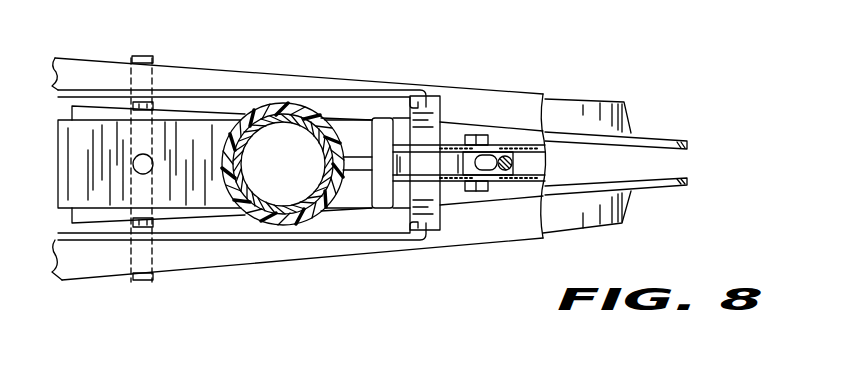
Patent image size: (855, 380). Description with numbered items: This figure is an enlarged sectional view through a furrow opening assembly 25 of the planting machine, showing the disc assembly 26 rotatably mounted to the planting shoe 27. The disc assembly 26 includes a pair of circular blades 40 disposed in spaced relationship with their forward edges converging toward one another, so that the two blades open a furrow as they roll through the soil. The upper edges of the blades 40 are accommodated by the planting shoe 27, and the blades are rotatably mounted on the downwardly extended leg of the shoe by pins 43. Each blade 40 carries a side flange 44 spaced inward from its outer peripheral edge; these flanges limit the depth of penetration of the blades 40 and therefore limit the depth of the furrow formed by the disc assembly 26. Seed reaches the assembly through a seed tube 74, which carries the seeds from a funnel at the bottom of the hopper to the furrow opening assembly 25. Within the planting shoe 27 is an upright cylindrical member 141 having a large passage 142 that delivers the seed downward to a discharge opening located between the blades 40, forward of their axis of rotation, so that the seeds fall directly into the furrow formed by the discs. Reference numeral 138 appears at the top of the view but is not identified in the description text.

The furrow opening assembly 25 is at (333, 67).
The disc assembly 26 is at (683, 158).
The planting shoe 27 is at (483, 100).
The circular blade 40 is at (662, 140).
The pin 43 is at (141, 56).
The side flange 44 is at (627, 115).
The seed tube 74 is at (283, 103).
The frame member 138 is at (692, 0).
The upright cylindrical member 141 is at (272, 196).
The passage 142 is at (297, 185).